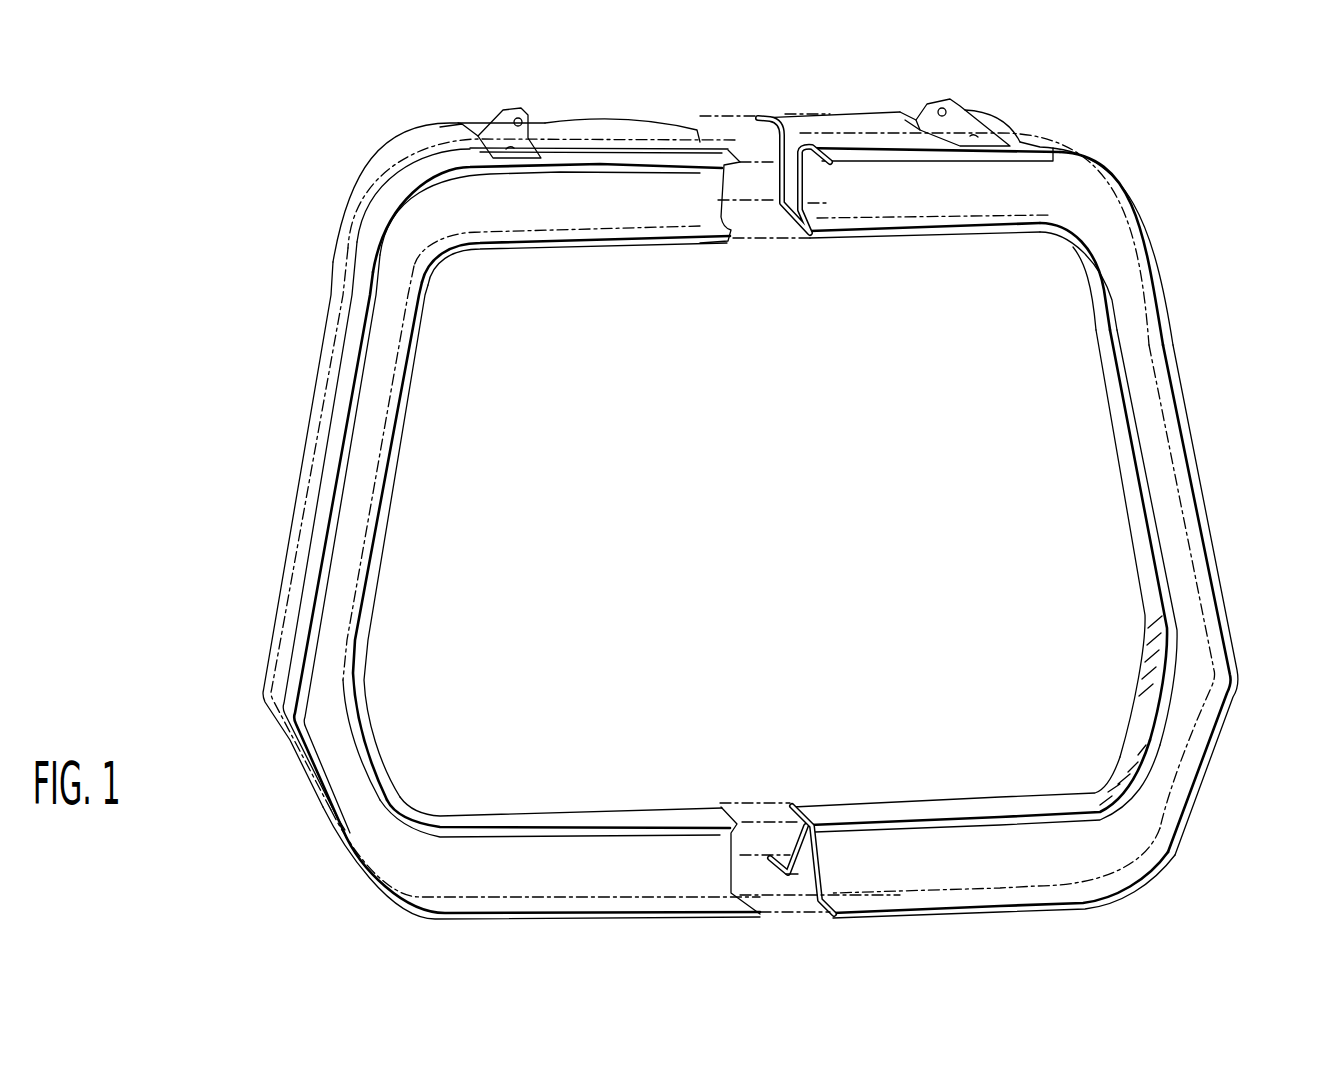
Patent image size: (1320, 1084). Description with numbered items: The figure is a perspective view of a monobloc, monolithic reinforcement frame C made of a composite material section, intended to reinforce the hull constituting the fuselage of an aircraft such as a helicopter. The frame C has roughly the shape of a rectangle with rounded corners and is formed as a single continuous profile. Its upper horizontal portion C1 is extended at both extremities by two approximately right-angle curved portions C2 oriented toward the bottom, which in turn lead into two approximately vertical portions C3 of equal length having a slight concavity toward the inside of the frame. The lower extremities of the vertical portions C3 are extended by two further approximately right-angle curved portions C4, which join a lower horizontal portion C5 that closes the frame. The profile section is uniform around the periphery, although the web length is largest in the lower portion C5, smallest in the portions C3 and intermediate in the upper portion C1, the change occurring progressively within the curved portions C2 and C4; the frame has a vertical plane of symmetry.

The frame C is at (228, 282).
The upper horizontal portion C1 is at (697, 195).
The curved portions C2 is at (417, 228).
The vertical portions C3 is at (352, 485).
The curved portions C4 is at (397, 853).
The lower horizontal portion C5 is at (834, 853).